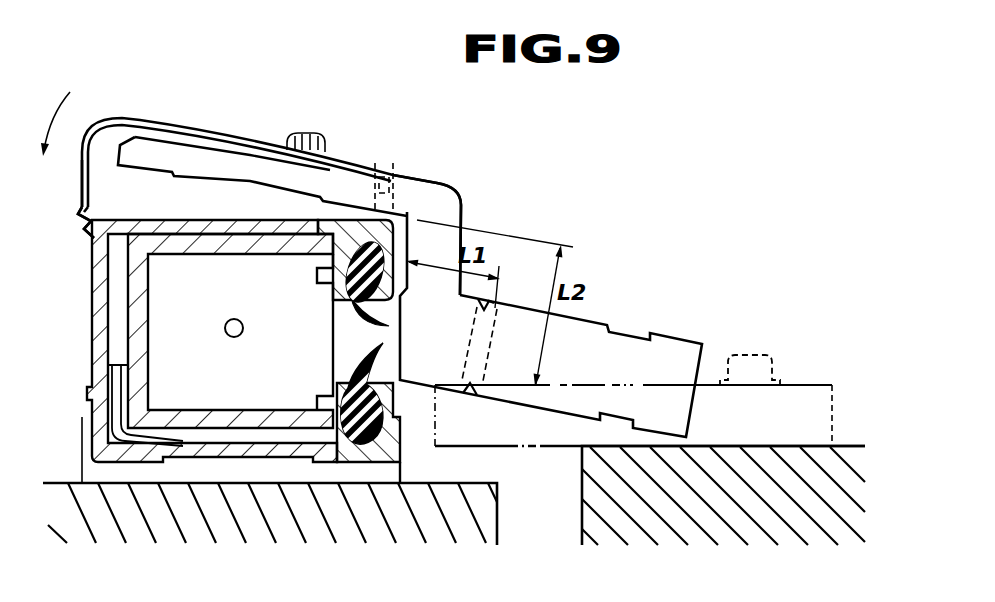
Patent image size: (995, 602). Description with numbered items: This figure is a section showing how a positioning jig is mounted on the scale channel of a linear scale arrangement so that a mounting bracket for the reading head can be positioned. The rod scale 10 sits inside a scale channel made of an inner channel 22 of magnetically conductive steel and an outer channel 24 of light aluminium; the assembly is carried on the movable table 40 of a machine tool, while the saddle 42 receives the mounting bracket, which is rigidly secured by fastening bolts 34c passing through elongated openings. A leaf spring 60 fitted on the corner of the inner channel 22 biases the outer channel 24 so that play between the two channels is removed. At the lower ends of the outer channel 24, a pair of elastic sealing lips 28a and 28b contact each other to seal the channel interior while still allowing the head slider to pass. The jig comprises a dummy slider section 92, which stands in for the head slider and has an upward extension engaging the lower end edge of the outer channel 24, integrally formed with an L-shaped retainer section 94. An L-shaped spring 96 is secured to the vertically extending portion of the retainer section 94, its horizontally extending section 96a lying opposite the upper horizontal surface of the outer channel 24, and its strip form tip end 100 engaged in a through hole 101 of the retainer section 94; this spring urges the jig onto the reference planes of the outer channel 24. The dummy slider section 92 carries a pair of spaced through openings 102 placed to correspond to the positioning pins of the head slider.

The scale 10 is at (234, 318).
The inner channel 22 is at (133, 350).
The outer channel 24 is at (91, 322).
The sealing lip 28a is at (362, 443).
The sealing lip 28b is at (383, 254).
The fastening bolt 34c is at (751, 354).
The movable table 40 is at (487, 531).
The saddle 42 is at (640, 513).
The leaf spring 60 is at (121, 418).
The dummy slider section 92 is at (606, 330).
The retainer section 94 is at (350, 172).
The L-shaped spring 96 is at (228, 126).
The horizontally extending section 96a is at (80, 160).
The strip form tip end 100 is at (394, 177).
The through hole 101 is at (422, 176).
The through opening 102 is at (480, 383).